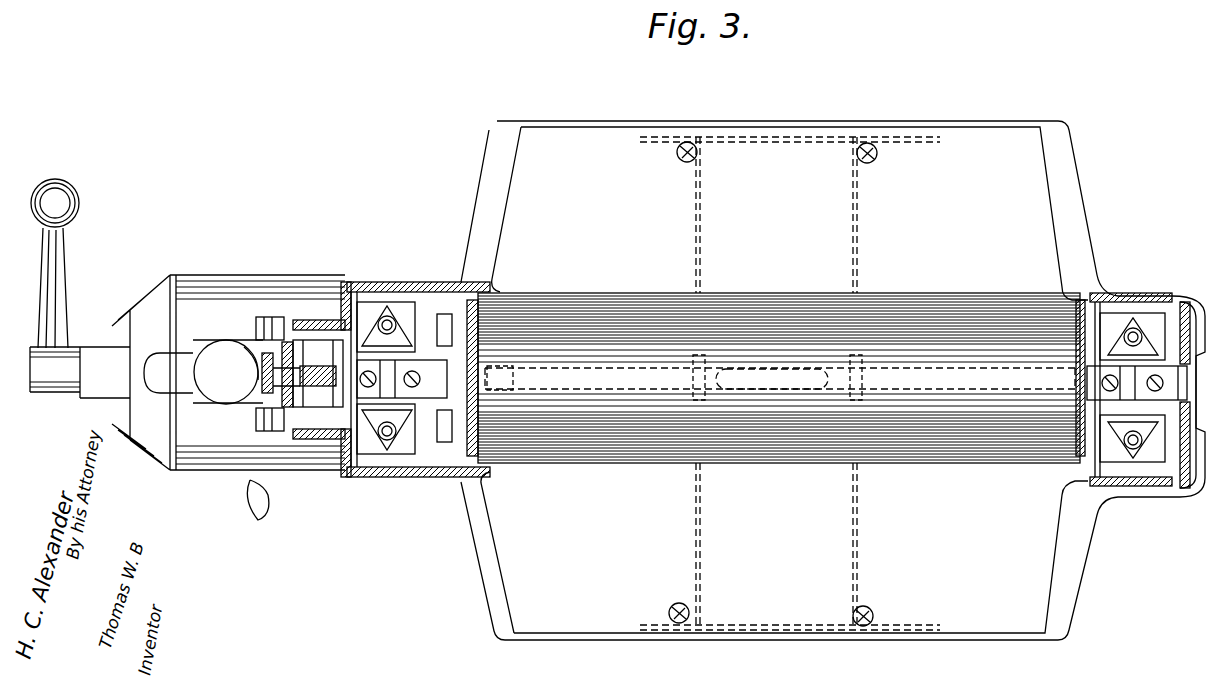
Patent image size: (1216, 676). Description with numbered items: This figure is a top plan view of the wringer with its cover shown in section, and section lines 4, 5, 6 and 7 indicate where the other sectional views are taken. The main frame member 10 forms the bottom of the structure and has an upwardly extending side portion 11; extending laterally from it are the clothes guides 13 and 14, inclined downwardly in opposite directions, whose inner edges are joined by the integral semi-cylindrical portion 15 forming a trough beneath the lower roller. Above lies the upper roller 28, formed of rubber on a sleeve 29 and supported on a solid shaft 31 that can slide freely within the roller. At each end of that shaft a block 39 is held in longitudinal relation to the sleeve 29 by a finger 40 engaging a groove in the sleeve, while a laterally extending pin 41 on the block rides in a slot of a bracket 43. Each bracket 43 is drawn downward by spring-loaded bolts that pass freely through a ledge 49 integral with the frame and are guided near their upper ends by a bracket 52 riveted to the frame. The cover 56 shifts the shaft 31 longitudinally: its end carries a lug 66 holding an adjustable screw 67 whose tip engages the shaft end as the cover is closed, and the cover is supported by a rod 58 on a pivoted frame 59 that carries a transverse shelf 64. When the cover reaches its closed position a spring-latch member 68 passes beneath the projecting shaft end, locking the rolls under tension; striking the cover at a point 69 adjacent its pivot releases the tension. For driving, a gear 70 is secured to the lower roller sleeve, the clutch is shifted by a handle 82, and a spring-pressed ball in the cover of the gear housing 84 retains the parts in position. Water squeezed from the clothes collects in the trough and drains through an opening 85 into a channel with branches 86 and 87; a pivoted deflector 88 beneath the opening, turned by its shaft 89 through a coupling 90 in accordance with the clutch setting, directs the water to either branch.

The section line 4- 4 is at (352, 545).
The section line 5- 5 is at (772, 675).
The section line 6- 6 is at (1170, 558).
The section line 7- 7 is at (227, 522).
The main frame member 10 is at (650, 640).
The side portion 11 is at (1140, 545).
The clothes guide 13 is at (996, 641).
The clothes guide 14 is at (953, 134).
The semi-cylindrical portion 15 is at (672, 448).
The upper roller 28 is at (780, 375).
The sleeve 29 is at (1064, 368).
The solid shaft 31 is at (1188, 300).
The block 39 is at (1108, 335).
The finger 40 is at (1090, 384).
The pin 41 is at (347, 432).
The bracket 43 is at (1120, 450).
The ledge 49 is at (430, 452).
The bracket 52 is at (1140, 462).
The cover 56 is at (1112, 488).
The rod 58 is at (262, 398).
The frame 59 is at (268, 320).
The shelf 64 is at (298, 320).
The lug 66 is at (322, 345).
The screw 67 is at (262, 373).
The spring-latch member 68 is at (1174, 500).
The point 69 is at (305, 455).
The gear 70 is at (446, 322).
The handle 82 is at (74, 224).
The gear housing 84 is at (180, 488).
The opening 85 is at (772, 384).
The branch 86 is at (870, 554).
The branch 87 is at (870, 235).
The deflector 88 is at (800, 348).
The shaft 89 is at (866, 386).
The coupling 90 is at (518, 366).